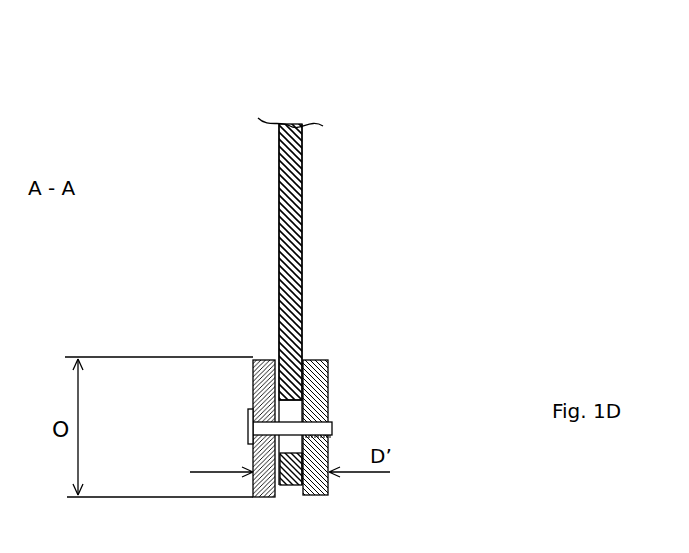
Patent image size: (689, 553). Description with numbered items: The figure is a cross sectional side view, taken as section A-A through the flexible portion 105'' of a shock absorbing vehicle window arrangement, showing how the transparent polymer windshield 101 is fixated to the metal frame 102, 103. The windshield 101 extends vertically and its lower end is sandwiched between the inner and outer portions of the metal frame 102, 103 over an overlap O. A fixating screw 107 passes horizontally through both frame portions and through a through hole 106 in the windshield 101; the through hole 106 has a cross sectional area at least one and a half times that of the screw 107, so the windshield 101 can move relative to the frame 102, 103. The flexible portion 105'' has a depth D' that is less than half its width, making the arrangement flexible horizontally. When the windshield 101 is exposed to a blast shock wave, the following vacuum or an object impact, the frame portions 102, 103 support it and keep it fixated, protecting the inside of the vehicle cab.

The flexible portion 105'' is at (296, 265).
The transparent polymer windshield 101 is at (288, 215).
The metal frame 102 is at (330, 380).
The metal frame 103 is at (263, 357).
The through hole 106 is at (287, 411).
The fixating screw 107 is at (248, 427).